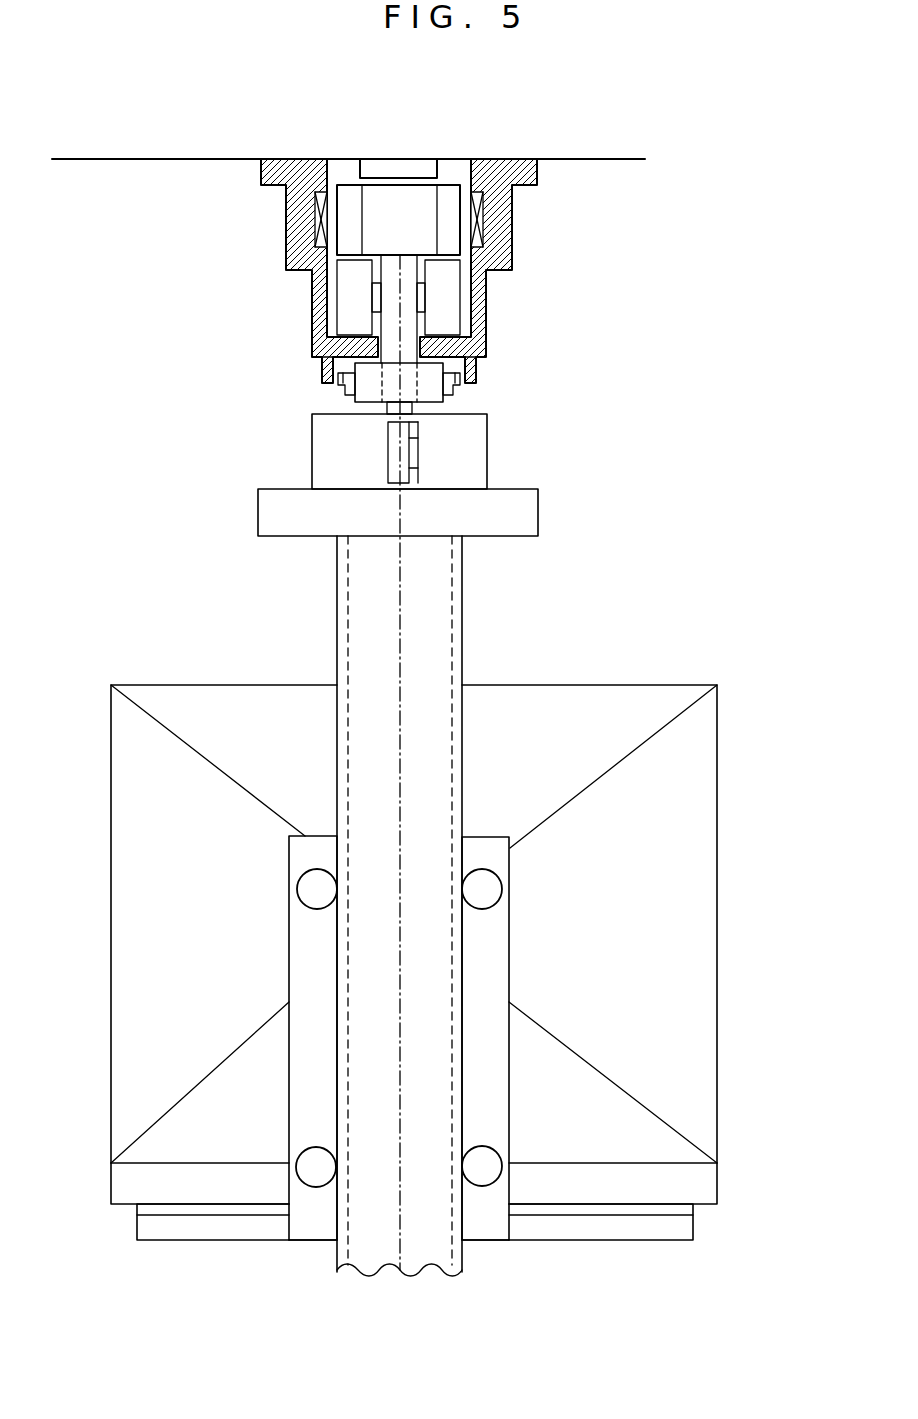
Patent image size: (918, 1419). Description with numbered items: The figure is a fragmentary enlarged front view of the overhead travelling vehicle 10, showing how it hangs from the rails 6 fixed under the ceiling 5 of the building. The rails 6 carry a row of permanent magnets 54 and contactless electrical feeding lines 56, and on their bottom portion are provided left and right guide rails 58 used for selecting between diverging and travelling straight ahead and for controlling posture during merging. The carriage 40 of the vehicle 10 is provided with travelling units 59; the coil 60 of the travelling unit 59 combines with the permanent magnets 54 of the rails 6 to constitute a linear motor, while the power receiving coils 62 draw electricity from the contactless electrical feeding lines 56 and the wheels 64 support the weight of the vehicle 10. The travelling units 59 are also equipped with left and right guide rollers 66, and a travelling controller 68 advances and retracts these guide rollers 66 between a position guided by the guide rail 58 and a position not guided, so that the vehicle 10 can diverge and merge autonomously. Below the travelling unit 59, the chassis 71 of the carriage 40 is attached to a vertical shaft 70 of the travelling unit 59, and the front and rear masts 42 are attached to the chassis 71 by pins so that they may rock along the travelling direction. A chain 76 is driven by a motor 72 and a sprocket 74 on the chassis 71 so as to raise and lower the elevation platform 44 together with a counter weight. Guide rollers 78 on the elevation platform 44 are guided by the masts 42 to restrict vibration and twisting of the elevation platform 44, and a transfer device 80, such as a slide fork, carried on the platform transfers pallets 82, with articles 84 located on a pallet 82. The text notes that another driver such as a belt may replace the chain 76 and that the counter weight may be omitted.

The ceiling 5 is at (166, 162).
The rails 6 is at (516, 222).
The overhead travelling vehicle 10 is at (468, 593).
The carriage 40 is at (98, 363).
The masts 42 is at (432, 636).
The elevation platform 44 is at (586, 1226).
The permanent magnets 54 is at (408, 168).
The contactless electrical feeding lines 56 is at (287, 215).
The guide rails 58 is at (320, 367).
The travelling units 59 is at (397, 292).
The coil 60 is at (391, 200).
The power receiving coils 62 is at (347, 228).
The wheels 64 is at (350, 308).
The guide rollers 66 is at (348, 386).
The travelling controller 68 is at (370, 390).
The vertical shaft 70 is at (393, 408).
The chassis 71 is at (491, 436).
The motor 72 is at (326, 462).
The sprocket 74 is at (405, 473).
The chain 76 is at (400, 737).
The guide rollers 78 is at (307, 888).
The transfer device 80 is at (222, 1210).
The pallets 82 is at (705, 1184).
The articles 84 is at (700, 955).